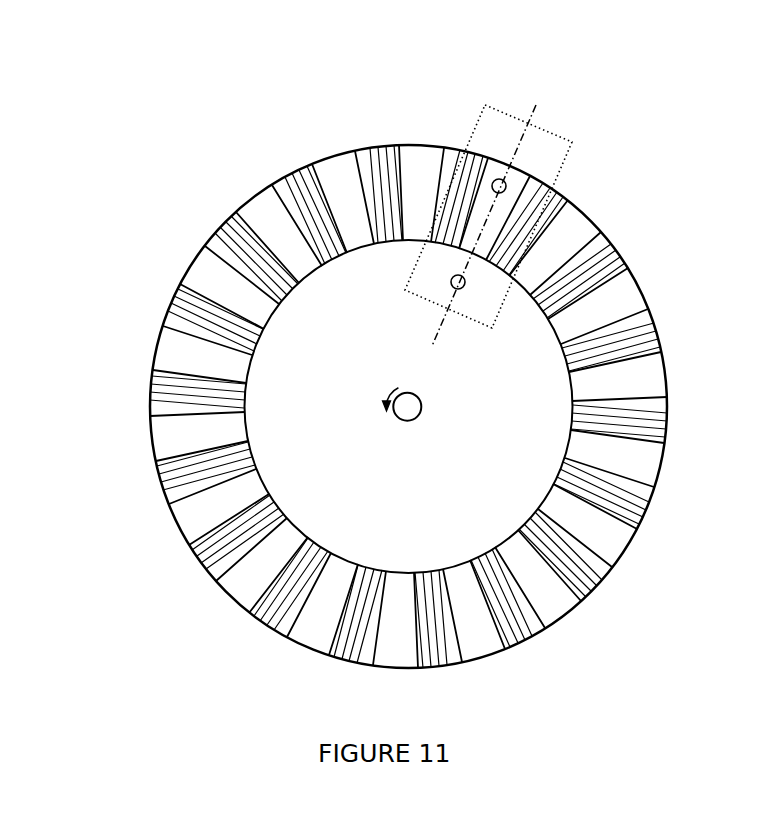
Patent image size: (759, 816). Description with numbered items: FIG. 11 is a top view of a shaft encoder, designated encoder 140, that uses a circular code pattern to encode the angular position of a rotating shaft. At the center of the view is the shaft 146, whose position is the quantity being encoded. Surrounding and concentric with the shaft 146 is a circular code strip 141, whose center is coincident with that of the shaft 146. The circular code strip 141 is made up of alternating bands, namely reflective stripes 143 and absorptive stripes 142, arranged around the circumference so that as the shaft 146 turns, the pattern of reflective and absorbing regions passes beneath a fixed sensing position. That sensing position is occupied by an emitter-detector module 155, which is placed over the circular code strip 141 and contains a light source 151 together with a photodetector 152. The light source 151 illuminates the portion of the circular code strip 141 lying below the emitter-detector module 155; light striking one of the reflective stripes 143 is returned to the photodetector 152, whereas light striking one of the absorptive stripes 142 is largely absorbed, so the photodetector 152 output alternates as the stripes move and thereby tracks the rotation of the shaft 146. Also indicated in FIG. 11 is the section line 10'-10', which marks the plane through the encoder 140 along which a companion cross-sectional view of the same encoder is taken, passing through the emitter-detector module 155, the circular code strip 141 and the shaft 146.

The encoder 140 is at (244, 113).
The circular code strip 141 is at (574, 612).
The absorptive stripes 142 is at (613, 542).
The reflective stripes 143 is at (657, 418).
The shaft 146 is at (421, 400).
The light source 151 is at (465, 283).
The photodetector 152 is at (503, 180).
The emitter-detector module 155 is at (566, 166).
The section line 10'- 10' is at (458, 205).